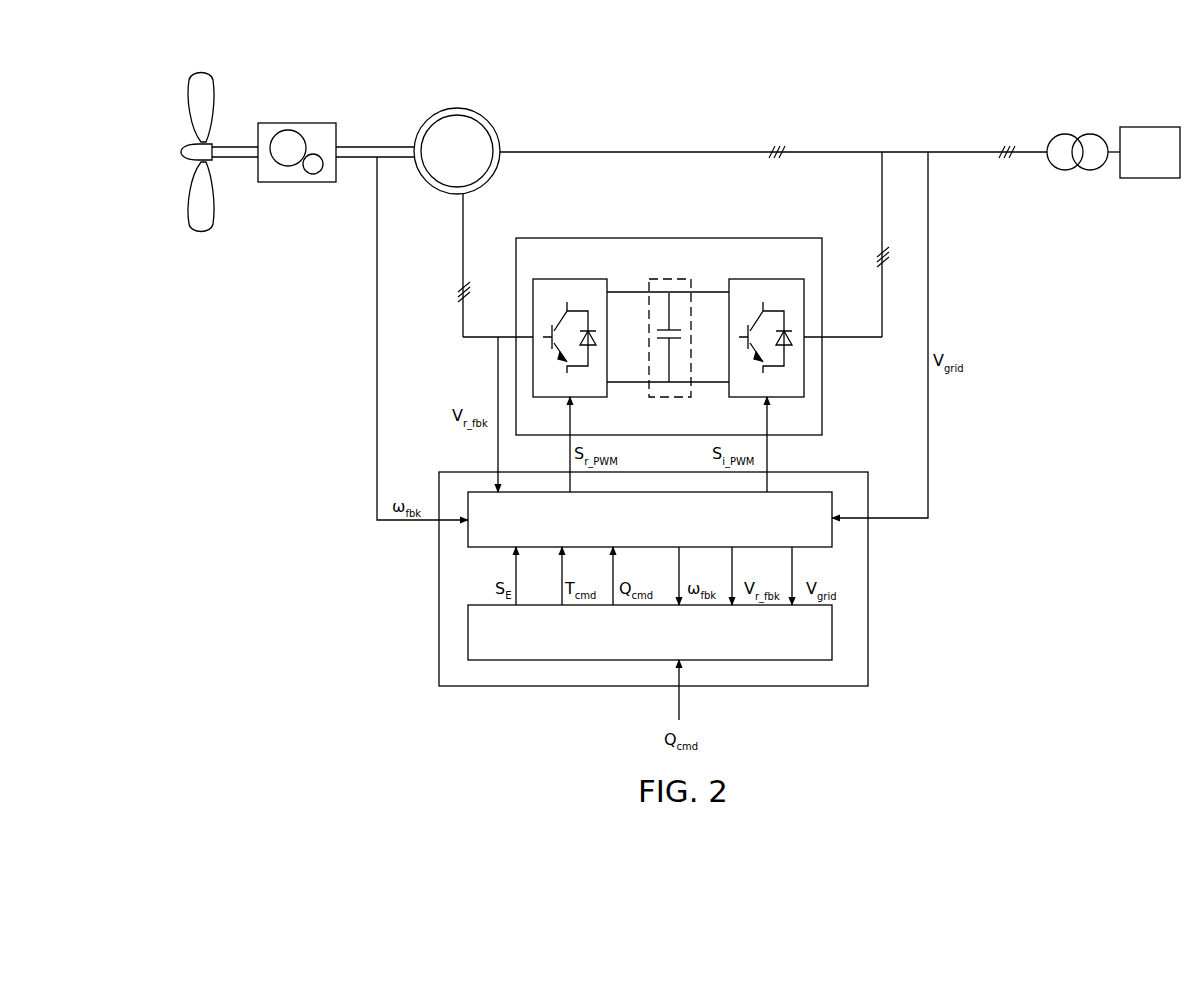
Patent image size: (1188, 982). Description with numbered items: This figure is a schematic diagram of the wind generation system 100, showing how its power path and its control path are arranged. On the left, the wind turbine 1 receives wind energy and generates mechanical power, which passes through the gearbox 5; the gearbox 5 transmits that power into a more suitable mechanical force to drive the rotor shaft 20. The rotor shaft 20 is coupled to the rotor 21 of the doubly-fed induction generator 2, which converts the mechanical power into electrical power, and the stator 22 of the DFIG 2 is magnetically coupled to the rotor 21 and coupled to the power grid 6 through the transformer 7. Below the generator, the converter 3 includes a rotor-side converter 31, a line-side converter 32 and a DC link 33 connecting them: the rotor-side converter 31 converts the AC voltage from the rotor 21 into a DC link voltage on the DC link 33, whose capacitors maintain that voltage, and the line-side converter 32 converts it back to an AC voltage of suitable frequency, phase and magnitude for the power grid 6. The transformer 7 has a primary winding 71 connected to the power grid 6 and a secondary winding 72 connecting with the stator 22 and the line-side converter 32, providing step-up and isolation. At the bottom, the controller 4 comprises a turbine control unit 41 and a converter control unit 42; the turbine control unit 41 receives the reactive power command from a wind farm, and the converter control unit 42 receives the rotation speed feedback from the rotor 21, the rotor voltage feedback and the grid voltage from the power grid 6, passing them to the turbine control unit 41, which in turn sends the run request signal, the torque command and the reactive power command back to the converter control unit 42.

The wind generation system 100 is at (829, 82).
The wind turbine 1 is at (213, 212).
The gearbox 5 is at (298, 123).
The rotor shaft 20 is at (397, 146).
The doubly-fed induction generator 2 is at (460, 141).
The rotor 21 is at (432, 166).
The stator 22 is at (488, 123).
The converter 3 is at (805, 238).
The rotor-side converter 31 is at (570, 279).
The line-side converter 32 is at (771, 279).
The DC link 33 is at (669, 279).
The controller 4 is at (841, 472).
The turbine control unit 41 is at (833, 630).
The converter control unit 42 is at (789, 492).
The transformer 7 is at (1088, 146).
The primary winding 71 is at (1093, 170).
The secondary winding 72 is at (1066, 170).
The power grid 6 is at (1157, 127).